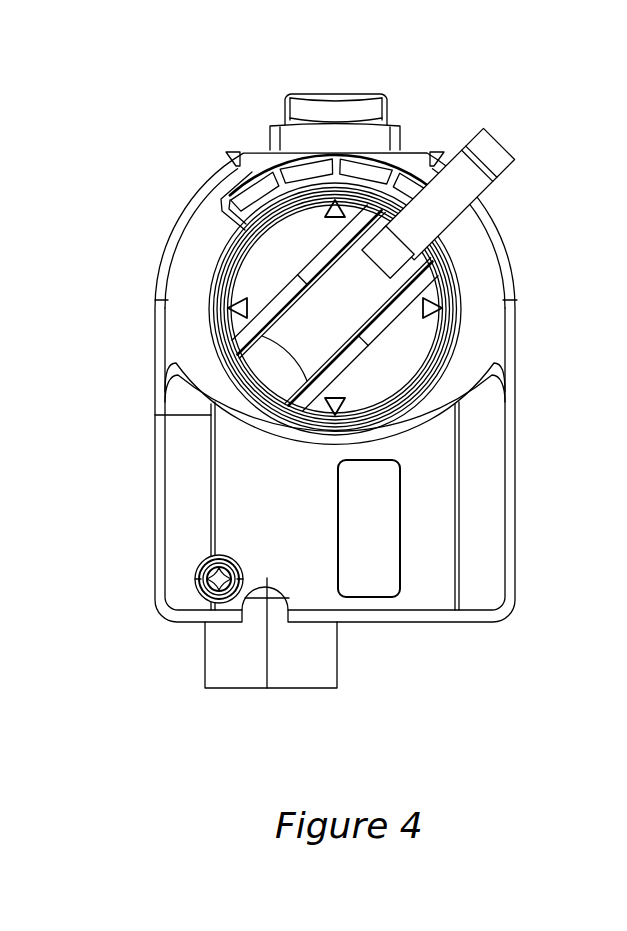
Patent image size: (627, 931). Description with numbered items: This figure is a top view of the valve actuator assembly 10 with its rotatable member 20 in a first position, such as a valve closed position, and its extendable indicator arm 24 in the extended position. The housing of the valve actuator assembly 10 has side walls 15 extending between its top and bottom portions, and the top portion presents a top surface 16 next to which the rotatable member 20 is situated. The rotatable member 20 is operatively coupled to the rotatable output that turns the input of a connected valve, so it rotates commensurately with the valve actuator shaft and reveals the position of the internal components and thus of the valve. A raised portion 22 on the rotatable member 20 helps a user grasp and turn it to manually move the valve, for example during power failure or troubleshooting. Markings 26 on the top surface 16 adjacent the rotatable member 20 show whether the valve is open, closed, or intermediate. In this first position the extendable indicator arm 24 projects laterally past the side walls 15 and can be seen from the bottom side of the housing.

The valve actuator assembly 10 is at (126, 86).
The side walls 15 is at (498, 218).
The top surface 16 is at (484, 269).
The rotatable member 20 is at (257, 273).
The raised portion 22 is at (362, 305).
The extendable indicator arm 24 is at (489, 156).
The markings 26 is at (244, 203).